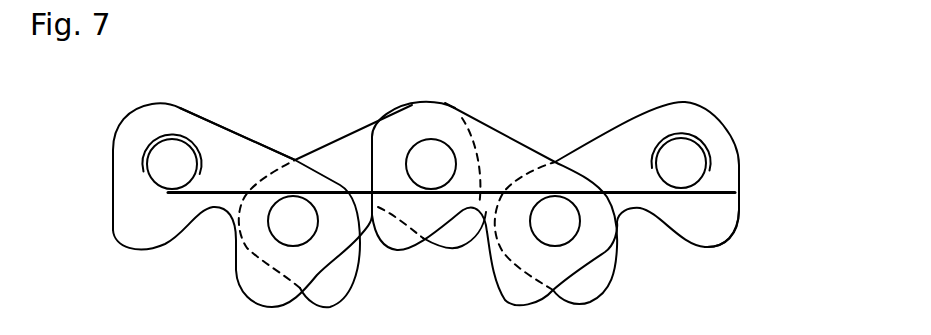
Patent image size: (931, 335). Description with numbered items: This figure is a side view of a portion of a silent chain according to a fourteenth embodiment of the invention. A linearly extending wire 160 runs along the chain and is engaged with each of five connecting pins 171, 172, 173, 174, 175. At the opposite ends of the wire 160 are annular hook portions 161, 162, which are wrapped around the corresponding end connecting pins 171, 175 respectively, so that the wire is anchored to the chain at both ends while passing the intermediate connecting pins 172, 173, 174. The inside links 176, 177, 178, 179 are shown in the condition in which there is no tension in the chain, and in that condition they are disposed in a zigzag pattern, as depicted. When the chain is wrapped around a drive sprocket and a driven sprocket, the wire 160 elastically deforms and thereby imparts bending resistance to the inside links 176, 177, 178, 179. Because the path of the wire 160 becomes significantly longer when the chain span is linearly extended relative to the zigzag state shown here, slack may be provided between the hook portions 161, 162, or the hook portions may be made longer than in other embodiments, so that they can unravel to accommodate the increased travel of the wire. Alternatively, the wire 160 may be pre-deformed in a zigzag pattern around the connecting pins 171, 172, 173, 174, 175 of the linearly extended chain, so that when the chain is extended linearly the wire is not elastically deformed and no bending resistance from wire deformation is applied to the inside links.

The wire 160 is at (372, 214).
The annular hook portion 161 is at (152, 142).
The annular hook portion 162 is at (683, 158).
The connecting pin 171 is at (167, 167).
The connecting pin 172 is at (291, 223).
The connecting pin 173 is at (428, 153).
The connecting pin 174 is at (555, 224).
The connecting pin 175 is at (707, 147).
The inside link 176 is at (253, 128).
The inside link 177 is at (368, 125).
The inside link 178 is at (518, 138).
The inside link 179 is at (733, 240).